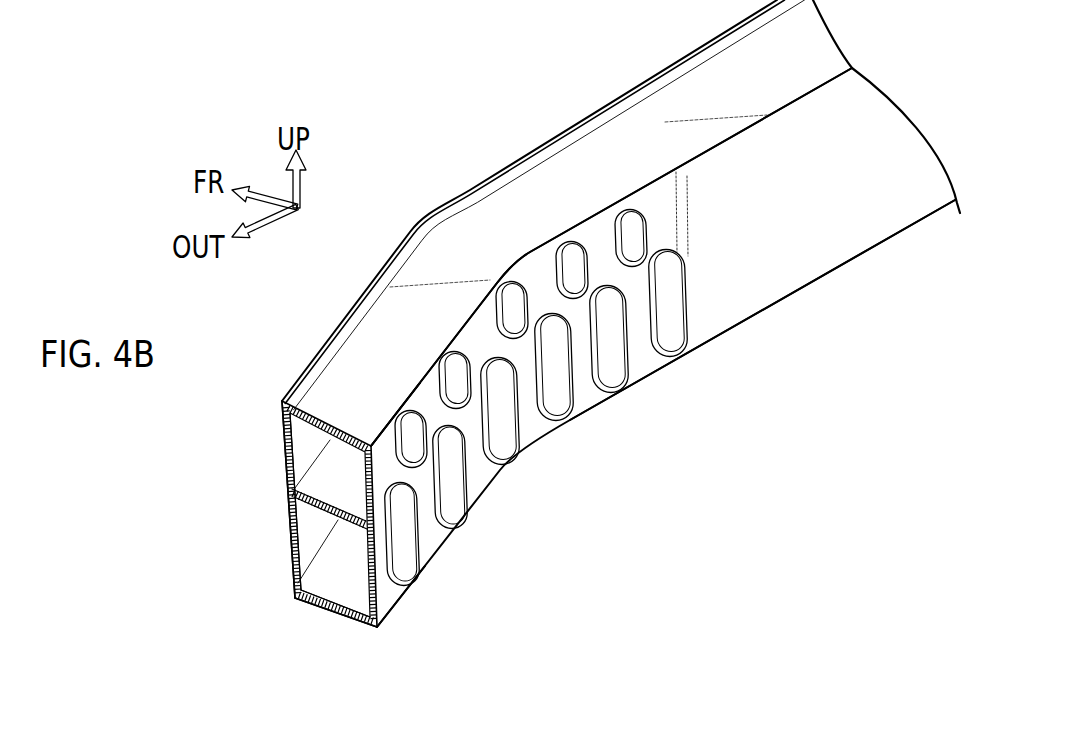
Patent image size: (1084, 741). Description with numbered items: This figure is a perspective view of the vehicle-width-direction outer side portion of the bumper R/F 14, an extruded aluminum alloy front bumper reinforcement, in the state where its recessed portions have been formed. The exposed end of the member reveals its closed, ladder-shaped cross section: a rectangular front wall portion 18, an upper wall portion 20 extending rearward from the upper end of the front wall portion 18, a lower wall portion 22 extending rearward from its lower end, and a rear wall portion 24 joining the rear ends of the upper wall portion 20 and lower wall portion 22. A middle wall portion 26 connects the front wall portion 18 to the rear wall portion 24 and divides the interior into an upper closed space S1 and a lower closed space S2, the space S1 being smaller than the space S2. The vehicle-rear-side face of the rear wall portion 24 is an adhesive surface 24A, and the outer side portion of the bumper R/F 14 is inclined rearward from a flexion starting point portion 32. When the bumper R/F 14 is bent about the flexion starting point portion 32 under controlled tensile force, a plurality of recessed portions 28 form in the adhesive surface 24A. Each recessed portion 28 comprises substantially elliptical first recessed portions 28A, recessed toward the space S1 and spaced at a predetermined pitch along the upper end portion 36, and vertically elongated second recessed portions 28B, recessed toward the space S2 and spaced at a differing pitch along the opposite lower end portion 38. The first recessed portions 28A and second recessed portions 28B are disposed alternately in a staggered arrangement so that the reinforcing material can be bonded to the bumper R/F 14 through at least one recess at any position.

The bumper R/F 14 is at (460, 190).
The front wall portion 18 is at (284, 456).
The upper wall portion 20 is at (733, 80).
The lower wall portion 22 is at (333, 607).
The rear wall portion 24 is at (762, 310).
The adhesive surface 24A is at (778, 243).
The middle wall portion 26 is at (335, 498).
The recessed portion 28 is at (537, 352).
The first recessed portion 28A is at (651, 216).
The second recessed portion 28B is at (400, 560).
The flexion starting point portion 32 is at (508, 273).
The end portion 36 is at (381, 453).
The end portion 38 is at (387, 607).
The closed space S1 is at (352, 487).
The closed space S2 is at (359, 574).